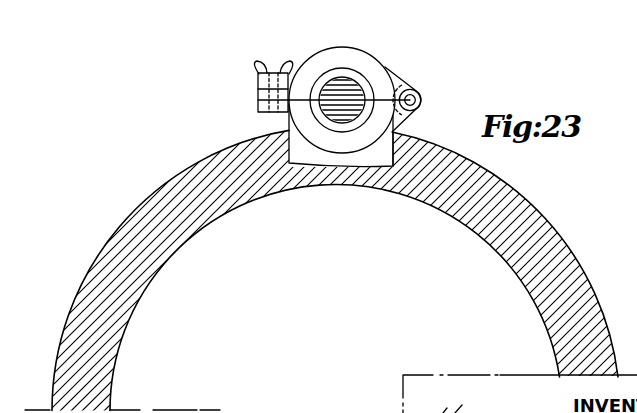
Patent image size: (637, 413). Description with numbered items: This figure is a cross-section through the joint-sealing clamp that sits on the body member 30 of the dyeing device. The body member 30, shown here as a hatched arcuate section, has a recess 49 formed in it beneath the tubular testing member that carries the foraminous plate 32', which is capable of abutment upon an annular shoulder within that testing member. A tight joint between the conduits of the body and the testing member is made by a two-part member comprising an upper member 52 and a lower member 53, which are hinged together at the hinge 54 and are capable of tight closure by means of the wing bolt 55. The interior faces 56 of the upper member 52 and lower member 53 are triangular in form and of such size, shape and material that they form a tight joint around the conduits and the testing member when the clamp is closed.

The body member 30 is at (543, 212).
The foraminous plate 32' is at (342, 74).
The recess 49 is at (384, 143).
The upper member 52 is at (371, 56).
The lower member 53 is at (297, 120).
The hinge 54 is at (421, 95).
The wing bolt 55 is at (268, 72).
The interior faces 56 is at (388, 64).